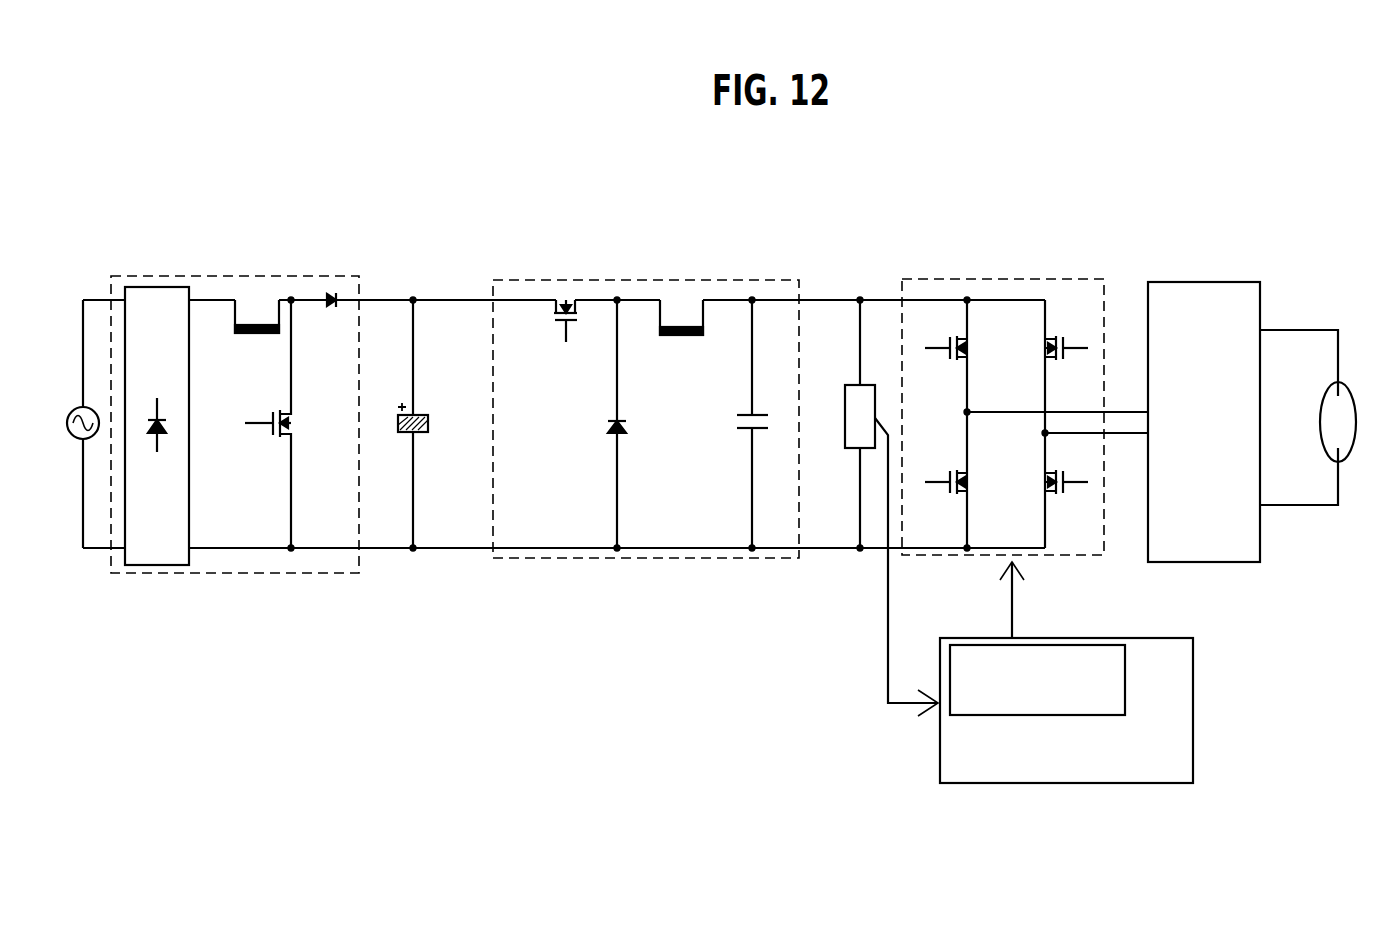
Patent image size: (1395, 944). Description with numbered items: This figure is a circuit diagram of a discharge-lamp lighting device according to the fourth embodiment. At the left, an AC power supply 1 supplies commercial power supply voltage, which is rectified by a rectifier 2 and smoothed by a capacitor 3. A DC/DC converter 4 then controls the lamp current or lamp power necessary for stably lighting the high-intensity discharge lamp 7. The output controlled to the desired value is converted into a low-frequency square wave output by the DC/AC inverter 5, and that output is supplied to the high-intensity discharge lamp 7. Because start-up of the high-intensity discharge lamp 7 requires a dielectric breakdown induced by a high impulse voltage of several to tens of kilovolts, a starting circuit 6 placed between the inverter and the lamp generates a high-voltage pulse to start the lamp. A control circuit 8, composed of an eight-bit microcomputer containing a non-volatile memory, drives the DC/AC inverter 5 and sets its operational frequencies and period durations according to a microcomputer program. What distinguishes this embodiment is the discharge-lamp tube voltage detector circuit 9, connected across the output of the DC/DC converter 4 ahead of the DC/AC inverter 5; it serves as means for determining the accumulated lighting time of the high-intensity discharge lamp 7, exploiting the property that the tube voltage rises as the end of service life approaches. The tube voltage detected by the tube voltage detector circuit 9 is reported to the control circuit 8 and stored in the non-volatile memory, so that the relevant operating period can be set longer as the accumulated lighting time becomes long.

The AC power supply 1 is at (80, 405).
The rectifier 2 is at (262, 276).
The capacitor 3 is at (428, 410).
The DC/DC converter 4 is at (650, 280).
The DC/AC inverter 5 is at (1014, 278).
The starting circuit 6 is at (1205, 282).
The high-intensity discharge lamp 7 is at (1358, 388).
The control circuit 8 is at (1025, 783).
The discharge-lamp tube voltage detector circuit 9 is at (850, 383).